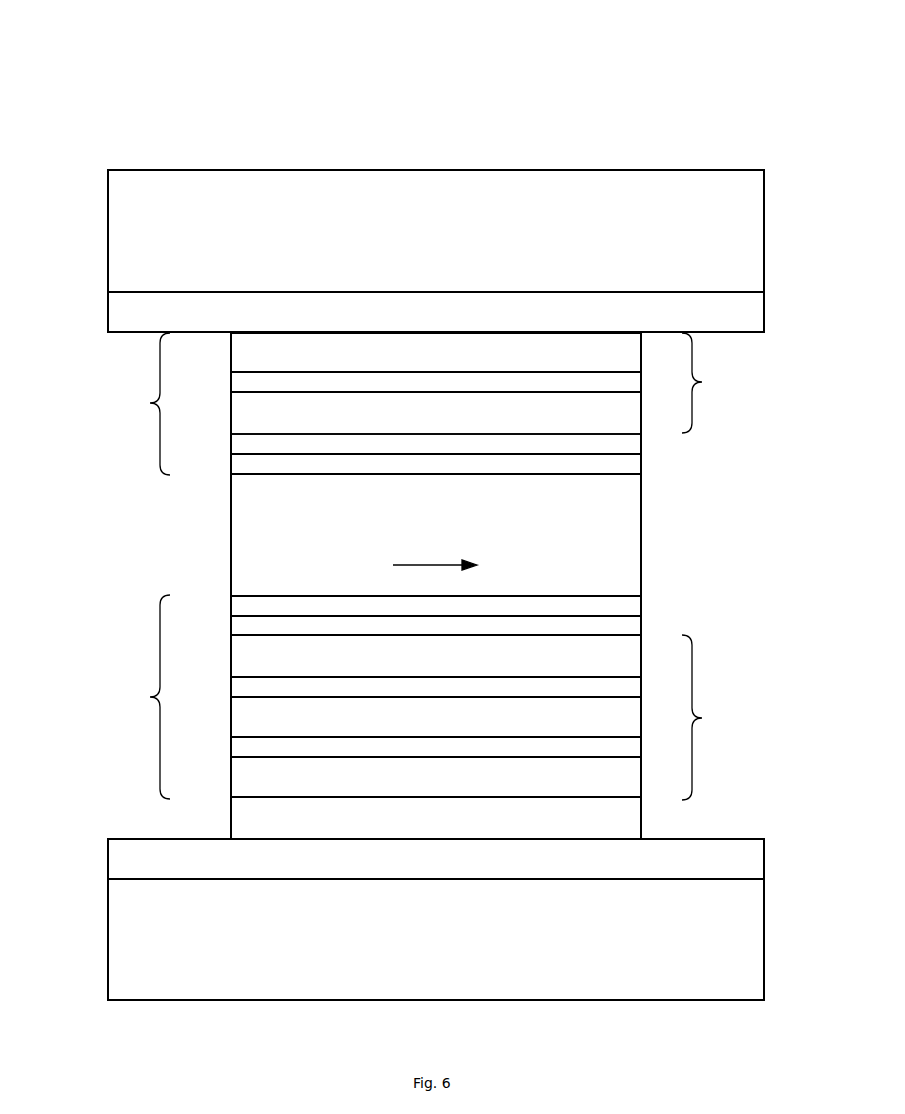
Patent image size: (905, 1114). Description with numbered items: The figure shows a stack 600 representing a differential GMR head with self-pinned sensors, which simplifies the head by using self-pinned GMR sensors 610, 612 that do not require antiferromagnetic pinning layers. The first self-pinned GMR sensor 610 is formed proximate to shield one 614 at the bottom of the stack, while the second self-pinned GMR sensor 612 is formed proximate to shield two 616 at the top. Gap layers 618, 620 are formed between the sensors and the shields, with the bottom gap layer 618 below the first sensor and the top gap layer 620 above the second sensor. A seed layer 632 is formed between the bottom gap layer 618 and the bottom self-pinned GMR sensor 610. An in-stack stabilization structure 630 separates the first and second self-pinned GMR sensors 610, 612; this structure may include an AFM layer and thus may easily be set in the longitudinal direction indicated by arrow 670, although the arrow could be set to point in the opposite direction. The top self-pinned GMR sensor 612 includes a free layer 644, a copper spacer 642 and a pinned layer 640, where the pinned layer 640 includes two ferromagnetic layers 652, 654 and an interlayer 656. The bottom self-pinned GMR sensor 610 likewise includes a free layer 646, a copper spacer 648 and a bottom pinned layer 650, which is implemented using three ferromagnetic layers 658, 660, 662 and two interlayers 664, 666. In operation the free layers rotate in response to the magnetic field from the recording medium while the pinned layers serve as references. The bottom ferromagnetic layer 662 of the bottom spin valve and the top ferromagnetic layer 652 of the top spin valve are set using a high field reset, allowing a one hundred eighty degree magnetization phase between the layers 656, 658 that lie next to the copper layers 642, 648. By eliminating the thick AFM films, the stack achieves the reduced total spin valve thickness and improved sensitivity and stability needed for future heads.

The differential GMR head 600 is at (170, 88).
The first self-pinned GMR sensor 610 is at (430, 717).
The second self-pinned GMR sensor 612 is at (435, 413).
The shield one 614 is at (764, 920).
The shield two 616 is at (764, 250).
The bottom gap layer 618 is at (764, 850).
The top gap layer 620 is at (764, 312).
The in-stack stabilization structure 630 is at (641, 525).
The seed layer 632 is at (641, 829).
The pinned layer 640 is at (545, 383).
The copper spacer 642 is at (641, 443).
The free layer 644 is at (767, 465).
The free layer 646 is at (767, 607).
The copper spacer 648 is at (641, 625).
The bottom pinned layer 650 is at (544, 717).
The top ferromagnetic layer 652 is at (436, 352).
The ferromagnetic layer 654 is at (436, 382).
The interlayer 656 is at (436, 413).
The ferromagnetic layer 658 is at (436, 656).
The ferromagnetic layer 660 is at (436, 717).
The bottom ferromagnetic layer 662 is at (436, 777).
The interlayer 664 is at (436, 687).
The interlayer 666 is at (436, 747).
The arrow 670 is at (422, 565).